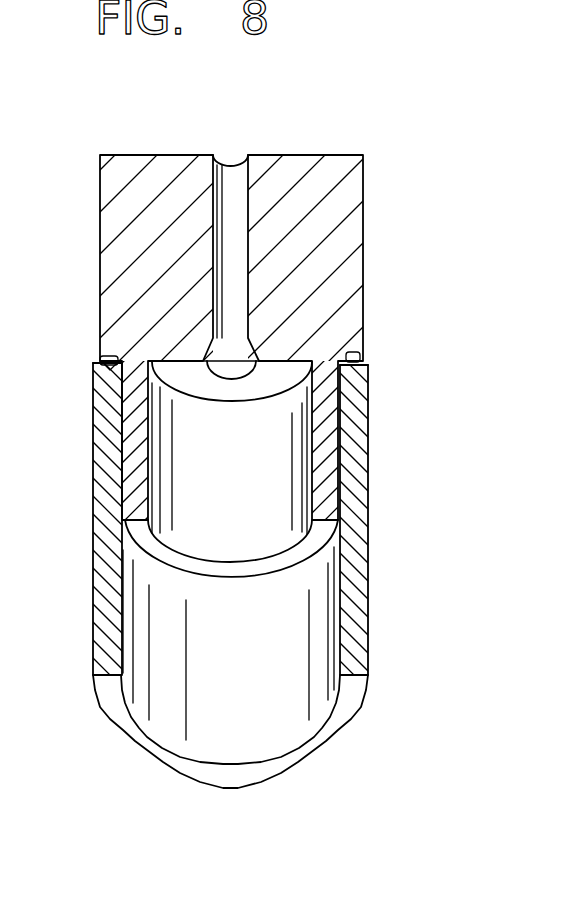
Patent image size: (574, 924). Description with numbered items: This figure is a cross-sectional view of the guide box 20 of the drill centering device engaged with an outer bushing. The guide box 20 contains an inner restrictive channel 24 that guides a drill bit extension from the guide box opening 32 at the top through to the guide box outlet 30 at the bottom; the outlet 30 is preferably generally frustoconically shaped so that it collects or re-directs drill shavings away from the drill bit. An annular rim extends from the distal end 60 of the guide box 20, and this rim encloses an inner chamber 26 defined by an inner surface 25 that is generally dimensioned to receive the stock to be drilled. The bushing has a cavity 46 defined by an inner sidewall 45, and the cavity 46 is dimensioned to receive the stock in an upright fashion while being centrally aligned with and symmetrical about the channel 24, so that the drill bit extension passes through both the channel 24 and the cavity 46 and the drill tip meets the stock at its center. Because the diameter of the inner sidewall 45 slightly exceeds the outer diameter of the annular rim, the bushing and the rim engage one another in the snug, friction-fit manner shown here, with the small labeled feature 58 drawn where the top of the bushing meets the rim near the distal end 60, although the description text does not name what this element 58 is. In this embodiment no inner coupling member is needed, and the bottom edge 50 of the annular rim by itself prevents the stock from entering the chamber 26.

The guide box 20 is at (345, 201).
The inner restrictive channel 24 is at (228, 231).
The inner surface 25 is at (252, 245).
The inner chamber 26 is at (298, 423).
The guide box outlet 30 is at (241, 403).
The guide box opening 32 is at (232, 162).
The inner sidewall 45 is at (325, 589).
The cavity 46 is at (320, 633).
The bottom edge 50 is at (279, 568).
The ring 58 is at (363, 363).
The distal end 60 is at (352, 352).